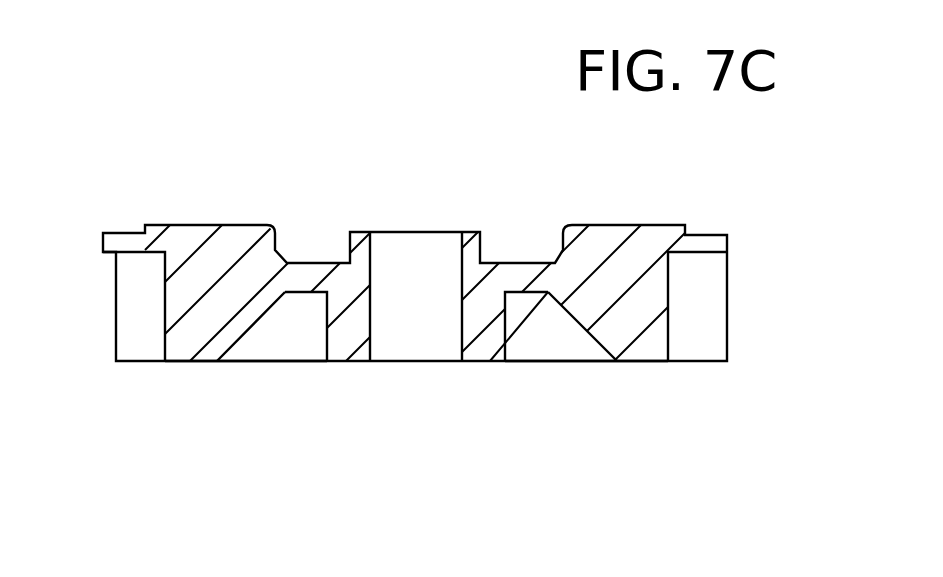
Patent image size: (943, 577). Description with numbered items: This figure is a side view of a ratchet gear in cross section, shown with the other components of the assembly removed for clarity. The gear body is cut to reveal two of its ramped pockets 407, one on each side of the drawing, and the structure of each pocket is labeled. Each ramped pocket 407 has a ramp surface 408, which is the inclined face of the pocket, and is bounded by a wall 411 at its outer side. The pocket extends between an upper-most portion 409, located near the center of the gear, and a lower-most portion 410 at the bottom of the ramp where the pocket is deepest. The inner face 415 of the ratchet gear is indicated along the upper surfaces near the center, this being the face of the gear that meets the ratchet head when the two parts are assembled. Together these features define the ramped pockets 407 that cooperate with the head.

The ramped pocket 407 is at (270, 394).
The ramp surface 408 is at (574, 317).
The upper-most portion 409 is at (289, 293).
The lower-most portion 410 is at (615, 361).
The wall 411 is at (668, 342).
The inner face 415 is at (503, 291).